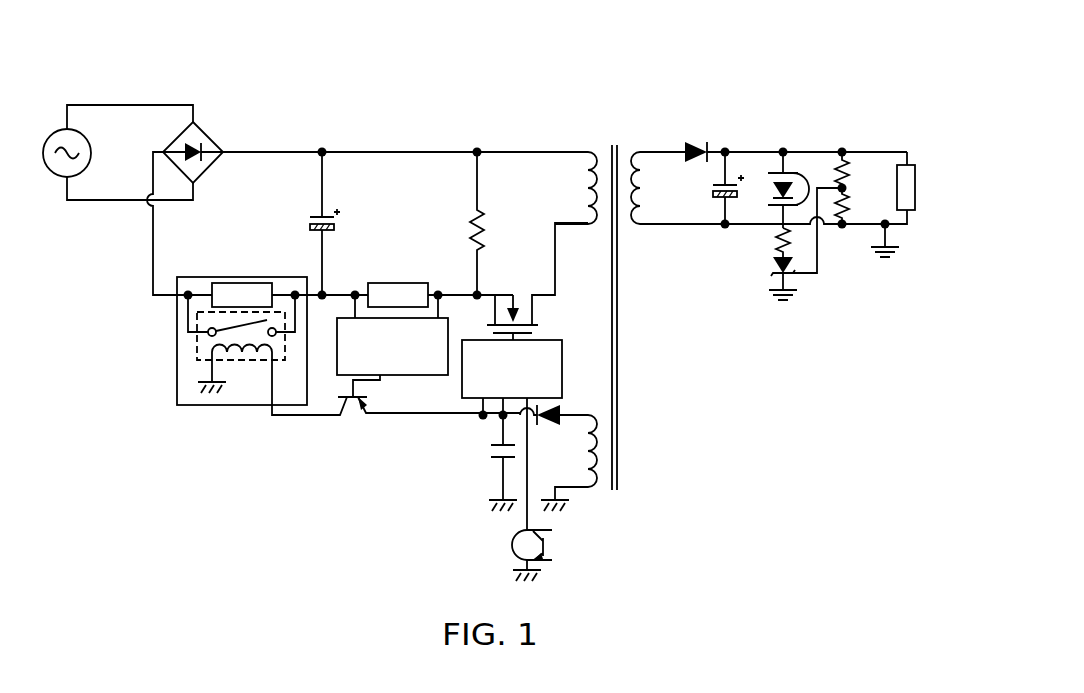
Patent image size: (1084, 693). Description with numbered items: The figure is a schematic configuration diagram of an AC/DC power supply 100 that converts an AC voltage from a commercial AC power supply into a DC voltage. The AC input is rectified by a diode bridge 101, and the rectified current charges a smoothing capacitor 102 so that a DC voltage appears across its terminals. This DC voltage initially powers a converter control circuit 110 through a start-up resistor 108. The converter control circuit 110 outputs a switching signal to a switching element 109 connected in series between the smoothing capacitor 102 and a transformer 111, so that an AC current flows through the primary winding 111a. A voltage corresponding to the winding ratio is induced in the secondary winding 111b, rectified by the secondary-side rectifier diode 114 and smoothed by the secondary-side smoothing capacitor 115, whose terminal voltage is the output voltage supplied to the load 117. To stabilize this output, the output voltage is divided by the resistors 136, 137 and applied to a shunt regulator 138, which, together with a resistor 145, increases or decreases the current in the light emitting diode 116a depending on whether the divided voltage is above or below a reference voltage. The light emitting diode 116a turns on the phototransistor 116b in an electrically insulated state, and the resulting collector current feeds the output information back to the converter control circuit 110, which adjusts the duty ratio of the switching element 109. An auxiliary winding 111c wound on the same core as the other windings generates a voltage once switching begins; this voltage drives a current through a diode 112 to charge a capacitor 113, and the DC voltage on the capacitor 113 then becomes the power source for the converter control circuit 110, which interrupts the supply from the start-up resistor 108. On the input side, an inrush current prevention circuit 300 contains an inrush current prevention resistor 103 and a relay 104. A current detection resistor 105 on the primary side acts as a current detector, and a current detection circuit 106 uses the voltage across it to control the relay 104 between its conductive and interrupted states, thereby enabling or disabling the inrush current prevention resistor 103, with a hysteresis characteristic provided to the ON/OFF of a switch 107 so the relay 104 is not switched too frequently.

The AC/DC power supply 100 is at (695, 62).
The diode bridge 101 is at (203, 130).
The smoothing capacitor 102 is at (308, 220).
The inrush current prevention resistor 103 is at (245, 283).
The relay 104 is at (197, 343).
The current detection resistor 105 is at (400, 283).
The current detection circuit 106 is at (397, 375).
The switch 107 is at (348, 418).
The start-up resistor 108 is at (468, 237).
The switching element 109 is at (508, 294).
The converter control circuit 110 is at (562, 367).
The transformer 111 is at (613, 145).
The primary winding 111a is at (590, 152).
The secondary winding 111b is at (641, 152).
The auxiliary winding 111c is at (617, 490).
The diode 112 is at (552, 428).
The capacitor 113 is at (488, 450).
The secondary-side rectifier diode 114 is at (700, 141).
The secondary-side smoothing capacitor 115 is at (712, 190).
The light emitting diode 116a is at (795, 172).
The phototransistor 116b is at (512, 547).
The load 117 is at (915, 185).
The resistor 136 is at (848, 180).
The resistor 137 is at (848, 210).
The shunt regulator 138 is at (775, 267).
The resistor 145 is at (778, 235).
The inrush current prevention circuit 300 is at (238, 407).